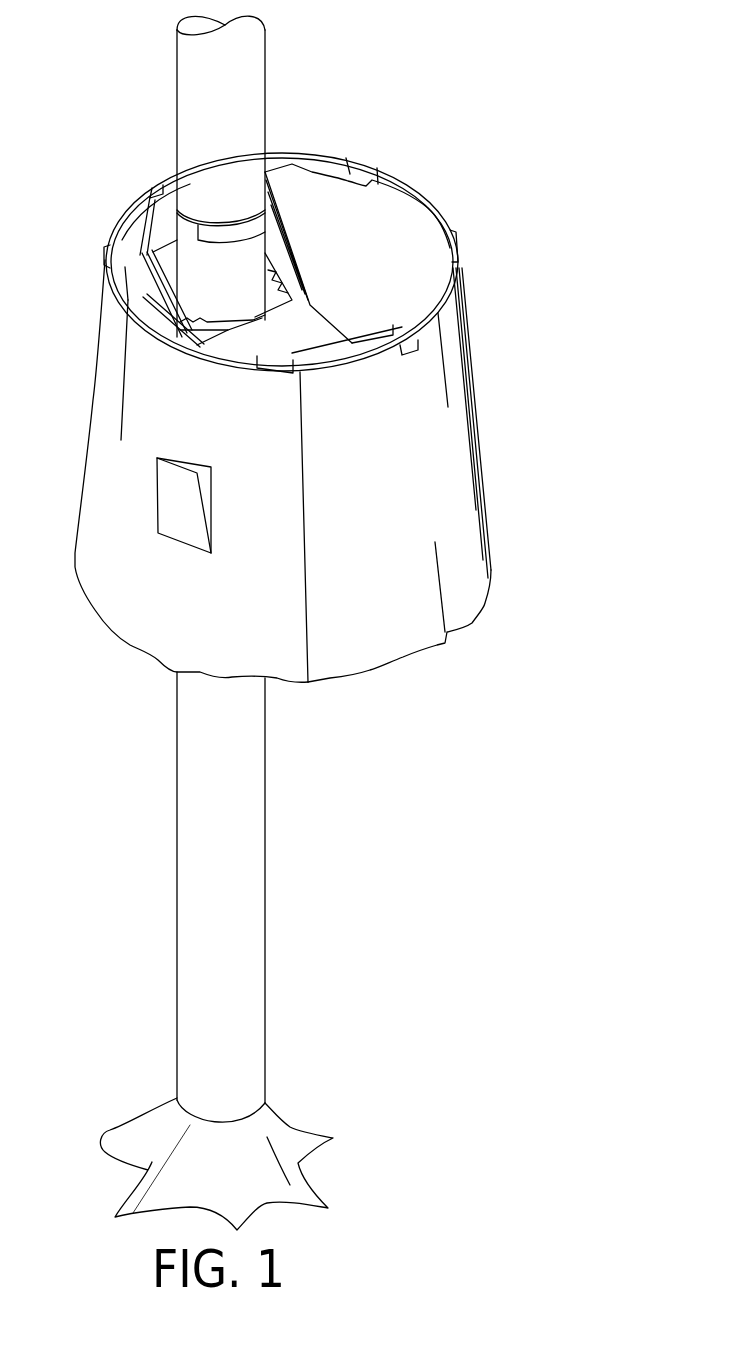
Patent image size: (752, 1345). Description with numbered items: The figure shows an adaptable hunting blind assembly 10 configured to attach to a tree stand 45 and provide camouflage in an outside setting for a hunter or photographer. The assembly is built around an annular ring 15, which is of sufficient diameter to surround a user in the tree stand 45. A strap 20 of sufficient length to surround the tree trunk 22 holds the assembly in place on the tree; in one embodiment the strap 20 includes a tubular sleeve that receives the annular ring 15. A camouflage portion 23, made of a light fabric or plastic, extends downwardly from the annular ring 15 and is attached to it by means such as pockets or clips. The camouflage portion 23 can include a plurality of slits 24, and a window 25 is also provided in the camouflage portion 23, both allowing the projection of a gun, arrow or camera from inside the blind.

The adaptable hunting blind assembly 10 is at (500, 175).
The annular ring 15 is at (363, 160).
The strap 20 is at (178, 218).
The tree trunk 22 is at (258, 823).
The camouflage portion 23 is at (453, 441).
The slits 24 is at (305, 533).
The window 25 is at (163, 497).
The tree stand 45 is at (310, 333).